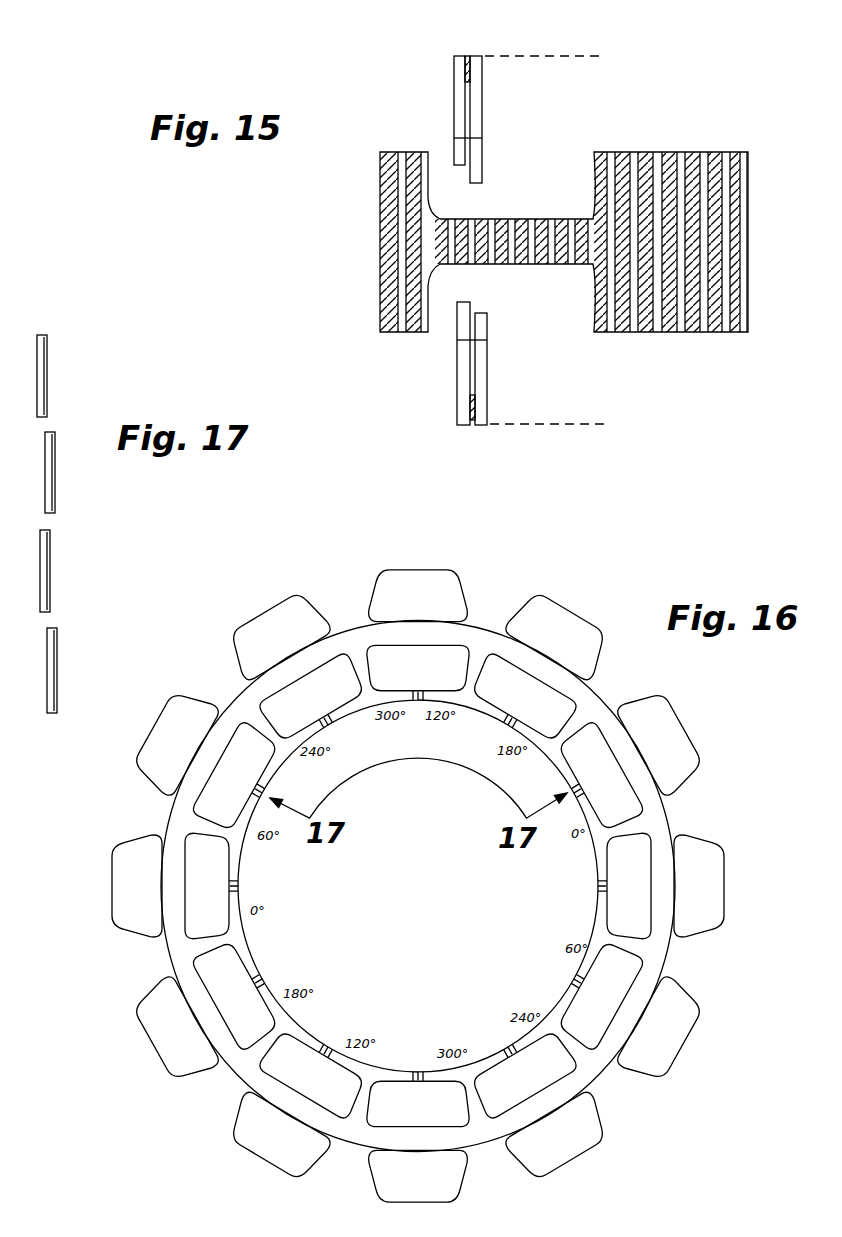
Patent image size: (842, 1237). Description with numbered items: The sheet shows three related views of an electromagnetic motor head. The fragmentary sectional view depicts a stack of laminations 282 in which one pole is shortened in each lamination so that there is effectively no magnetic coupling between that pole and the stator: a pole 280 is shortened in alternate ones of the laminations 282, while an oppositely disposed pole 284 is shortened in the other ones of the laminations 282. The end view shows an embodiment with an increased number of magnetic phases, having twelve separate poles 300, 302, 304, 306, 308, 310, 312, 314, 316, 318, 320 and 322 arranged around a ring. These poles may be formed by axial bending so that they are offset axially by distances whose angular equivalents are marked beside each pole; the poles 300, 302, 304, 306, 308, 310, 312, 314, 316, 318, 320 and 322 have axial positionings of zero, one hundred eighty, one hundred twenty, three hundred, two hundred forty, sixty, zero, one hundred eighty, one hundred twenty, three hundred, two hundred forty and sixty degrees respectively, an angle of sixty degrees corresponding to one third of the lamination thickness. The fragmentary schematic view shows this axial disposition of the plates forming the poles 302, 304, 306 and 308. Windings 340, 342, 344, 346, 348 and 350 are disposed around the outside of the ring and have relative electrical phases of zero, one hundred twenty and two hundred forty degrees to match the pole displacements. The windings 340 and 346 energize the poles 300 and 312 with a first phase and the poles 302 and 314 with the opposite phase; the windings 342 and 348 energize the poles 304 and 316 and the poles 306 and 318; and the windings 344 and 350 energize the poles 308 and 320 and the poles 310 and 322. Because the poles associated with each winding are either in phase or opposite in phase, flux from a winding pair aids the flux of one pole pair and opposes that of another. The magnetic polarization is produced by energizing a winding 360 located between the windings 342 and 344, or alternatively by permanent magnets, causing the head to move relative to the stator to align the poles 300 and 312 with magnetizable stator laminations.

In FIG. 15, the pole 280 is at (478, 168).
In FIG. 15, the laminations 282 is at (457, 56).
In FIG. 15, the pole 284 is at (468, 308).
In FIG. 16, the pole 300 is at (592, 848).
In FIG. 17, the pole 302 is at (48, 365).
In FIG. 16, the pole 302 is at (548, 753).
In FIG. 17, the pole 304 is at (52, 448).
In FIG. 16, the pole 304 is at (465, 708).
In FIG. 17, the pole 306 is at (50, 548).
In FIG. 16, the pole 306 is at (372, 710).
In FIG. 17, the pole 308 is at (56, 650).
In FIG. 16, the pole 308 is at (293, 758).
In FIG. 16, the pole 310 is at (248, 845).
In FIG. 16, the pole 312 is at (246, 936).
In FIG. 16, the pole 314 is at (295, 1012).
In FIG. 16, the pole 316 is at (376, 1060).
In FIG. 16, the pole 318 is at (470, 1060).
In FIG. 16, the pole 320 is at (554, 1013).
In FIG. 16, the pole 322 is at (592, 928).
In FIG. 16, the winding 340 is at (720, 868).
In FIG. 16, the winding 342 is at (585, 614).
In FIG. 16, the winding 344 is at (301, 600).
In FIG. 16, the winding 346 is at (125, 897).
In FIG. 16, the winding 348 is at (278, 1163).
In FIG. 16, the winding 350 is at (572, 1150).
In FIG. 16, the winding 360 is at (445, 582).